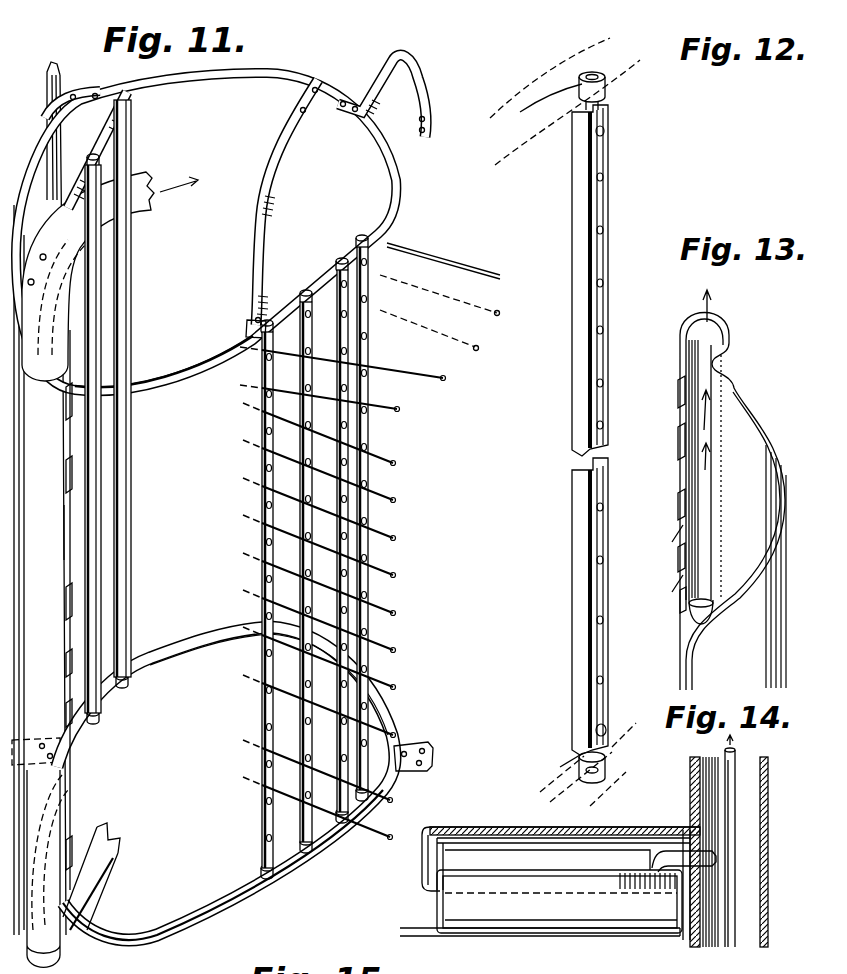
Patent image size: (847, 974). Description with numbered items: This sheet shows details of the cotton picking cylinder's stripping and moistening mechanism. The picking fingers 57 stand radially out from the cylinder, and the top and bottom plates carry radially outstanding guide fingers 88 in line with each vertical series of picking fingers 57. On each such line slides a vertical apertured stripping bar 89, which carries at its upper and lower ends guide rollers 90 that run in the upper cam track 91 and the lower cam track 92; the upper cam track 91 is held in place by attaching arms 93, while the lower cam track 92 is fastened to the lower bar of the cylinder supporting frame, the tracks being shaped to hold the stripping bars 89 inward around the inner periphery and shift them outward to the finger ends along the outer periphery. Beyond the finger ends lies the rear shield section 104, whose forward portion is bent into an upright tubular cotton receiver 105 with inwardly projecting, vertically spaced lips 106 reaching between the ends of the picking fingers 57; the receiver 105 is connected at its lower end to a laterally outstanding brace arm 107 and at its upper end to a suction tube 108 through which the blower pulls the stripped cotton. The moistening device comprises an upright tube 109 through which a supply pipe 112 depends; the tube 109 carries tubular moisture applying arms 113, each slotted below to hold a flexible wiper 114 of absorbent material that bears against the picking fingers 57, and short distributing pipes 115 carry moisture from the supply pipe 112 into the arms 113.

In FIG. 11, the picking fingers 57 is at (395, 463).
In FIG. 14, the picking fingers 57 is at (477, 937).
In FIG. 11, the guide fingers 88 is at (497, 322).
In FIG. 11, the stripping bar 89 is at (100, 548).
In FIG. 12, the stripping bar 89 is at (612, 165).
In FIG. 11, the guide rollers 90 is at (122, 116).
In FIG. 12, the guide rollers 90 is at (588, 82).
In FIG. 11, the upper cam track 91 is at (200, 364).
In FIG. 12, the upper cam track 91 is at (535, 148).
In FIG. 11, the lower cam track 92 is at (197, 903).
In FIG. 12, the lower cam track 92 is at (578, 760).
In FIG. 11, the attaching arms 93 is at (388, 80).
In FIG. 11, the rear shield section 104 is at (30, 140).
In FIG. 13, the rear shield section 104 is at (745, 496).
In FIG. 11, the tubular cotton receiver 105 is at (49, 532).
In FIG. 13, the tubular cotton receiver 105 is at (722, 333).
In FIG. 11, the lips 106 is at (70, 462).
In FIG. 13, the lips 106 is at (681, 440).
In FIG. 11, the brace arm 107 is at (104, 842).
In FIG. 11, the suction tube 108 is at (150, 218).
In FIG. 14, the upright tube 109 is at (767, 813).
In FIG. 14, the supply pipe 112 is at (730, 793).
In FIG. 14, the moisture applying arms 113 is at (500, 850).
In FIG. 14, the flexible wiper 114 is at (563, 917).
In FIG. 14, the distributing pipes 115 is at (687, 857).